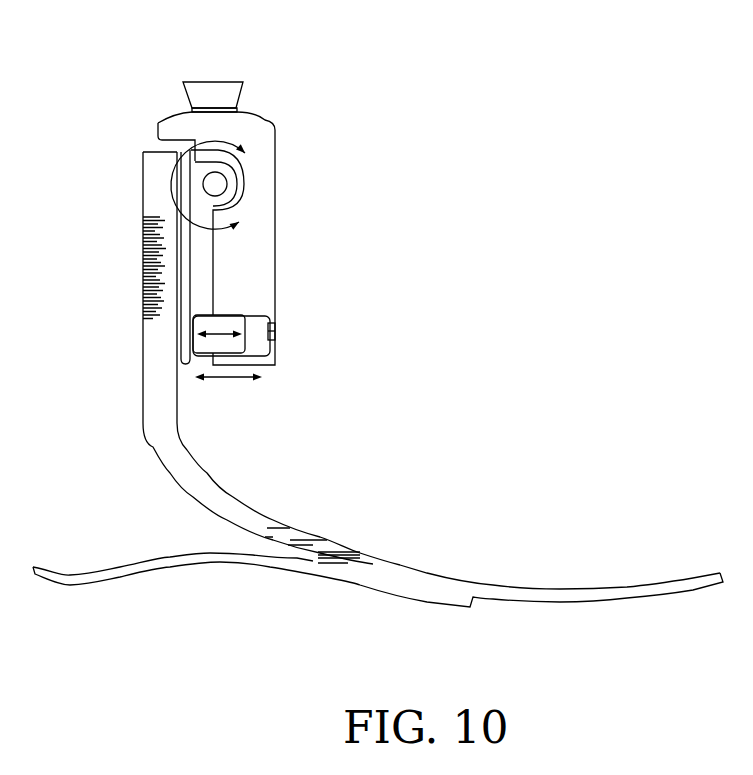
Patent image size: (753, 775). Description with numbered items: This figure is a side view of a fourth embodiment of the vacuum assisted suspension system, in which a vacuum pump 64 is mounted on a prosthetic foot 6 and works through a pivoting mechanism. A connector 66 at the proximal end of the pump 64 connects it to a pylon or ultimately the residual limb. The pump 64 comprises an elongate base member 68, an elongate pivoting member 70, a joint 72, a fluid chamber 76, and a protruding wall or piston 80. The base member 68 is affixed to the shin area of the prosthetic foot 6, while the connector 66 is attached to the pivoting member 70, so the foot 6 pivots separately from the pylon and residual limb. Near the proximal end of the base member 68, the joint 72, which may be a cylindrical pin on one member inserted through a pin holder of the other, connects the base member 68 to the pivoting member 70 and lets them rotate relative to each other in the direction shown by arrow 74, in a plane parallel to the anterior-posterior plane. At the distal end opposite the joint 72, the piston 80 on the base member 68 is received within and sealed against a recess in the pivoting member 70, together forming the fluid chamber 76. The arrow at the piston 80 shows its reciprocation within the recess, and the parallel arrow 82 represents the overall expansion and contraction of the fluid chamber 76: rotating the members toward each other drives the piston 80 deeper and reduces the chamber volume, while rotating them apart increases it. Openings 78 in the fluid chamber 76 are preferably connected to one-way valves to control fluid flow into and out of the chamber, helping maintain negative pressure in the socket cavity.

The prosthetic foot 6 is at (157, 177).
The vacuum pump 64 is at (271, 86).
The connector 66 is at (200, 88).
The elongate base member 68 is at (183, 360).
The elongate pivoting member 70 is at (258, 230).
The joint 72 is at (215, 183).
The arrow 74 is at (195, 145).
The fluid chamber 76 is at (255, 327).
The openings 78 is at (273, 325).
The protruding wall or piston 80 is at (215, 343).
The arrow 82 is at (237, 378).